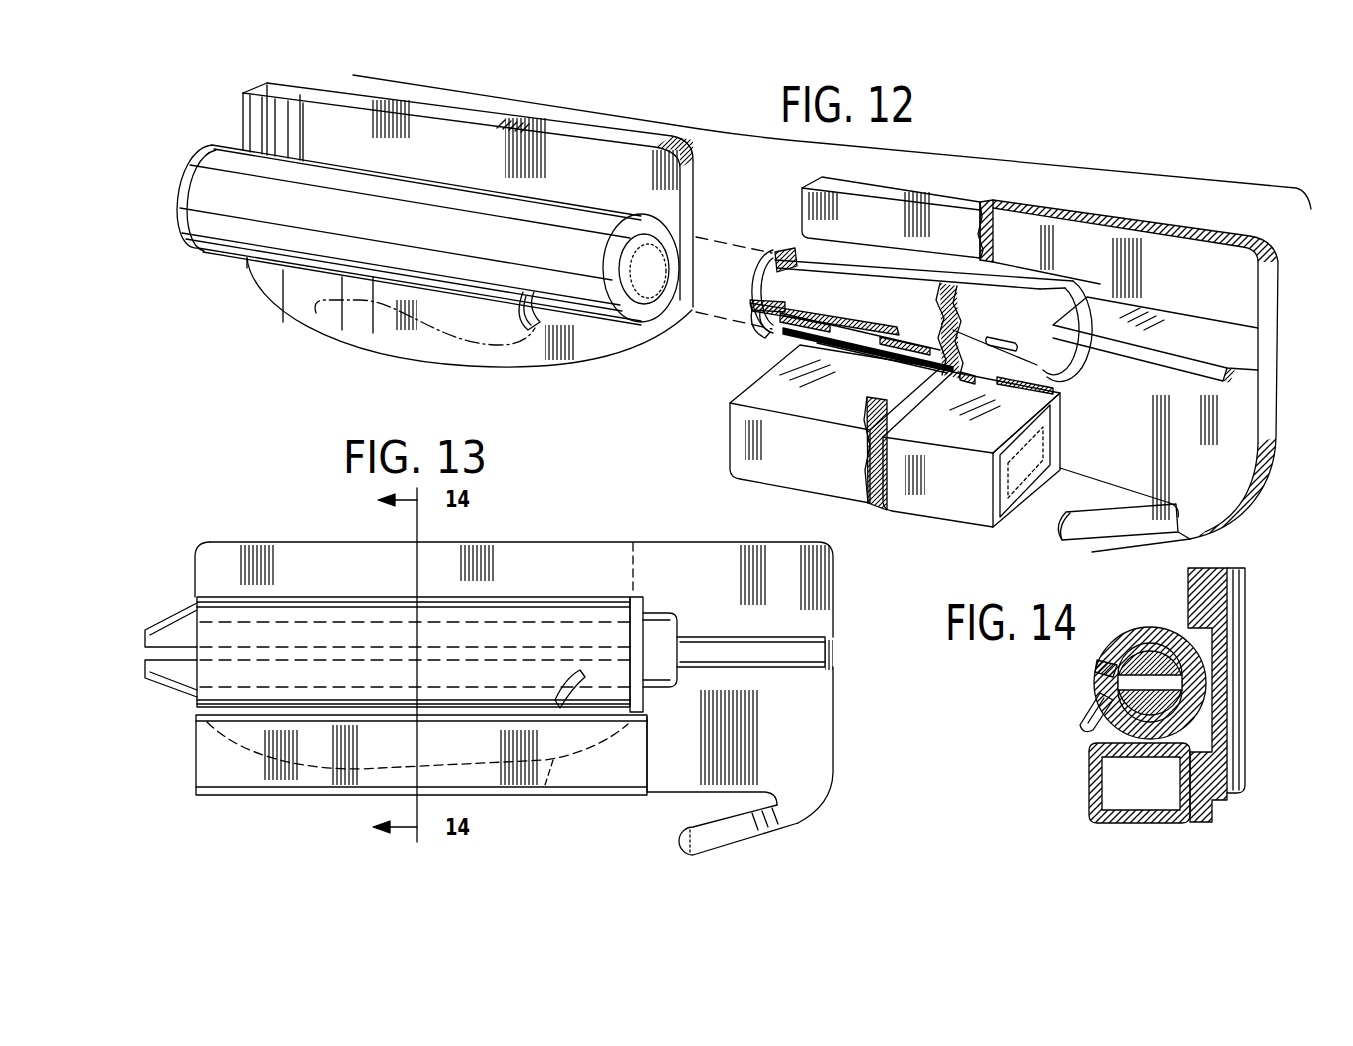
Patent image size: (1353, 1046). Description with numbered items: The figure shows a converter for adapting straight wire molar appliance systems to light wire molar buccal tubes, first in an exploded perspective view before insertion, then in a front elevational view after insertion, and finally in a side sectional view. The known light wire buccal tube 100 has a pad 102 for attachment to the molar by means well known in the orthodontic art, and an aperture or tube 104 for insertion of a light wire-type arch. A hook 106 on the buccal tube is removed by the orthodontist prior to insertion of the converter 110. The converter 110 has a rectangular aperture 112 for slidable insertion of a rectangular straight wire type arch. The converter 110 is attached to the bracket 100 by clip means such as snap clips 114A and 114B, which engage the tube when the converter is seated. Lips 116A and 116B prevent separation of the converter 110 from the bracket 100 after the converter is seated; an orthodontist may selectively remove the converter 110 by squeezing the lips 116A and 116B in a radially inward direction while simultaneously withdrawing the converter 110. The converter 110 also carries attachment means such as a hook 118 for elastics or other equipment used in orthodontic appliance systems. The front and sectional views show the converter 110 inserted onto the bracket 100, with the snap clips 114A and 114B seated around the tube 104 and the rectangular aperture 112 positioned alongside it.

In FIG. 12, the light wire buccal tube 100 is at (698, 152).
In FIG. 13, the light wire buccal tube 100 is at (636, 573).
In FIG. 14, the light wire buccal tube 100 is at (1244, 665).
In FIG. 12, the pad 102 is at (462, 161).
In FIG. 13, the pad 102 is at (537, 800).
In FIG. 14, the pad 102 is at (1220, 618).
In FIG. 12, the aperture or tube 104 is at (630, 278).
In FIG. 13, the aperture or tube 104 is at (643, 608).
In FIG. 14, the aperture or tube 104 is at (1105, 677).
In FIG. 12, the hook 106 is at (486, 350).
In FIG. 12, the converter 110 is at (1103, 213).
In FIG. 12, the rectangular aperture 112 is at (998, 515).
In FIG. 13, the rectangular aperture 112 is at (610, 753).
In FIG. 14, the rectangular aperture 112 is at (1090, 790).
In FIG. 12, the snap clip 114A is at (887, 337).
In FIG. 13, the snap clip 114A is at (357, 687).
In FIG. 14, the snap clip 114A is at (1173, 703).
In FIG. 12, the snap clip 114B is at (872, 292).
In FIG. 13, the snap clip 114B is at (385, 620).
In FIG. 14, the snap clip 114B is at (1157, 657).
In FIG. 12, the lip 116A is at (768, 330).
In FIG. 13, the lip 116A is at (182, 677).
In FIG. 14, the lip 116A is at (1103, 700).
In FIG. 12, the lip 116B is at (772, 258).
In FIG. 13, the lip 116B is at (183, 627).
In FIG. 14, the lip 116B is at (1112, 670).
In FIG. 12, the hook 118 is at (1060, 540).
In FIG. 13, the hook 118 is at (690, 831).